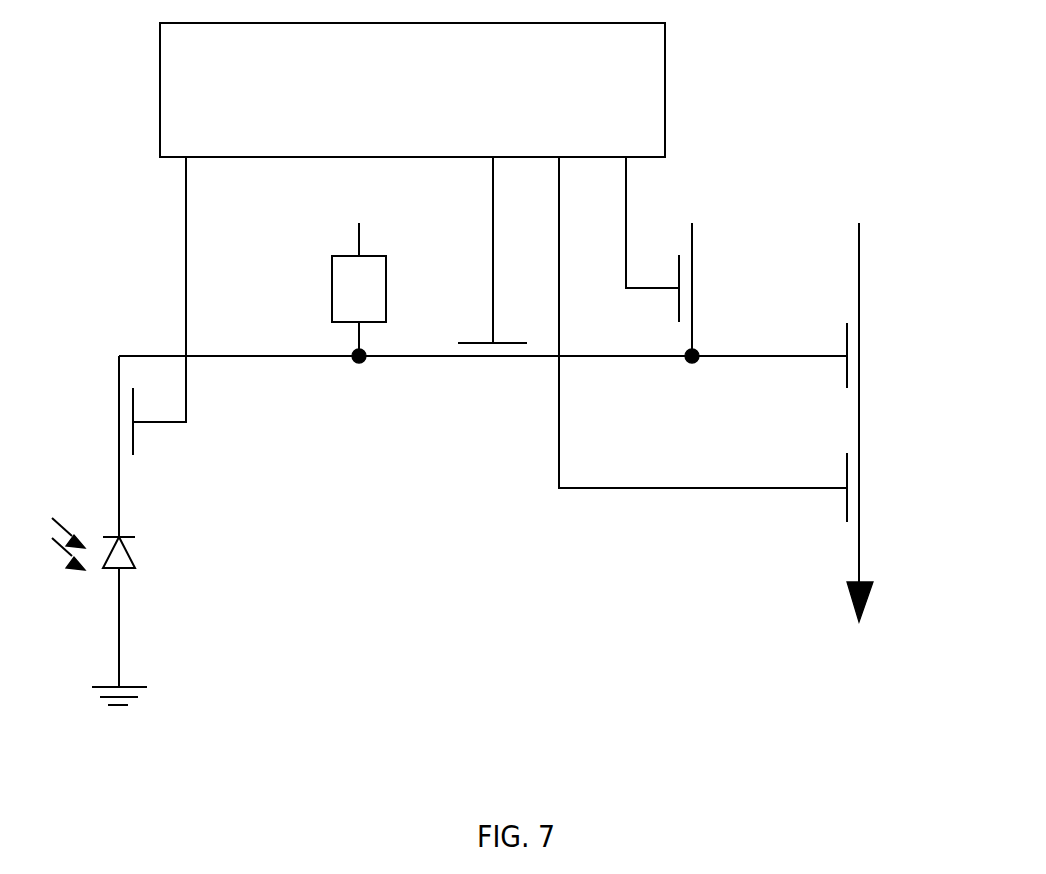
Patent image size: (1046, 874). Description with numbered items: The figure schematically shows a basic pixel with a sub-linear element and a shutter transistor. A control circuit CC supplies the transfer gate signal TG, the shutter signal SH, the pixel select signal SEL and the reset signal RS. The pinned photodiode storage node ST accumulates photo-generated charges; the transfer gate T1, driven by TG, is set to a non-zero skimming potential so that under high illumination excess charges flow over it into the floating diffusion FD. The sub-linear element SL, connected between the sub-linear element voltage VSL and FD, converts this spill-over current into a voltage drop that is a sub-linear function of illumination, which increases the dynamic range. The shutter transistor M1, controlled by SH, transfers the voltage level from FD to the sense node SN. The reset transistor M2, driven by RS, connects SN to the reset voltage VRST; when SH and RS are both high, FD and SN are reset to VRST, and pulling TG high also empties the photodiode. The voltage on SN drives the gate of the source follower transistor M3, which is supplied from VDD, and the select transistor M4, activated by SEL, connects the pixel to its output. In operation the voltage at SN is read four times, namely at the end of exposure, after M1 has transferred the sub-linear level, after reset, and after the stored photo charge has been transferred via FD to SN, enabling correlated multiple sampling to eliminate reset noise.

The control circuit CC is at (412, 90).
The transfer gate TG is at (171, 273).
The shutter signal SH is at (489, 234).
The pixel select signal SEL is at (689, 306).
The reset signal RS is at (642, 206).
The transfer gate transistor T1 is at (102, 446).
The pinned photodiode storage node ST is at (110, 602).
The sub-linear element voltage VSL is at (359, 224).
The sub-linear element SL is at (359, 306).
The floating diffusion FD is at (358, 373).
The shutter transistor M1 is at (492, 366).
The reset voltage VRST is at (689, 274).
The reset transistor M2 is at (710, 288).
The sense node SN is at (692, 376).
The supply voltage VDD is at (858, 407).
The source follower transistor M3 is at (878, 355).
The select transistor M4 is at (878, 487).